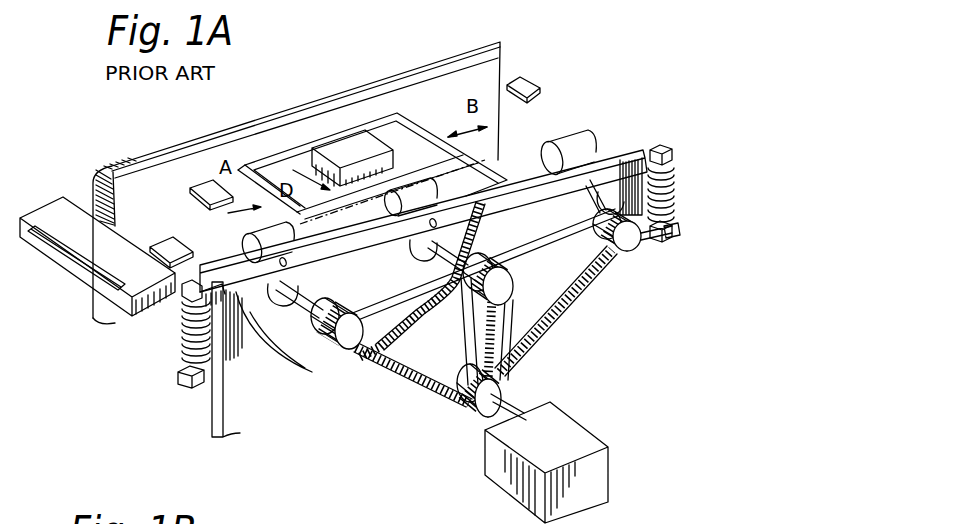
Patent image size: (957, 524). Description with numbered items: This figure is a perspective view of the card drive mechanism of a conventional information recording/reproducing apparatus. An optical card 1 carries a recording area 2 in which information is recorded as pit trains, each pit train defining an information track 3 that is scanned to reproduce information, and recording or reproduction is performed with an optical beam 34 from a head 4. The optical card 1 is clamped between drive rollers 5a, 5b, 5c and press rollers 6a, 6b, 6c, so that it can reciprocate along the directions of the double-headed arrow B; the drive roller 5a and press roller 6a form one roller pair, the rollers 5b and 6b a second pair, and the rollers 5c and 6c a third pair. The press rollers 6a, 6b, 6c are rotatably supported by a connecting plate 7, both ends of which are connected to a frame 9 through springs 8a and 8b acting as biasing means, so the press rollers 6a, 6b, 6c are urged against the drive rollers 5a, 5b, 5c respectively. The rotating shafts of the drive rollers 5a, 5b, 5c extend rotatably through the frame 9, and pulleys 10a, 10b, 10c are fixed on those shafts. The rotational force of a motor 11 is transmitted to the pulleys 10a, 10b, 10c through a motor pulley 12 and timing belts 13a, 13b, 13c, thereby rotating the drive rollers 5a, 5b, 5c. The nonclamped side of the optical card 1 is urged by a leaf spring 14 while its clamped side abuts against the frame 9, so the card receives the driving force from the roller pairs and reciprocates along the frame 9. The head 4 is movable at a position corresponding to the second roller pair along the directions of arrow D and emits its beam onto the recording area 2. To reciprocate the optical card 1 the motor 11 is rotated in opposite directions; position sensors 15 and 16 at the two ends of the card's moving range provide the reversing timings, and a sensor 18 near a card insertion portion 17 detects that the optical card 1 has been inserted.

The optical card 1 is at (486, 182).
The recording area 2 is at (273, 175).
The information track 3 is at (297, 198).
The head 4 is at (350, 147).
The drive roller 5a is at (258, 333).
The drive roller 5b is at (420, 253).
The drive roller 5c is at (536, 165).
The press roller 6a is at (247, 236).
The press roller 6b is at (373, 223).
The press roller 6c is at (570, 154).
The connecting plate 7 is at (663, 147).
The spring 8a is at (180, 347).
The spring 8b is at (668, 202).
The frame 9 is at (219, 402).
The pulley 10a is at (310, 369).
The pulley 10b is at (513, 279).
The pulley 10c is at (640, 253).
The motor 11 is at (563, 425).
The motor pulley 12 is at (503, 390).
The timing belt 13a is at (410, 390).
The timing belt 13b is at (460, 323).
The timing belt 13c is at (588, 295).
The leaf spring 14 is at (468, 72).
The position sensor 15 is at (196, 180).
The position sensor 16 is at (522, 78).
The card insertion portion 17 is at (47, 217).
The sensor 18 is at (160, 241).
The optical beam 34 is at (400, 163).